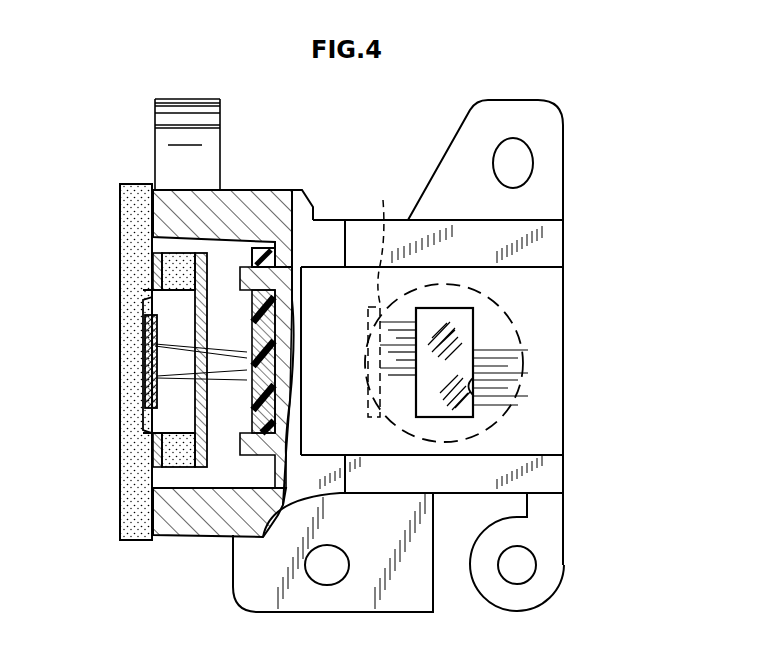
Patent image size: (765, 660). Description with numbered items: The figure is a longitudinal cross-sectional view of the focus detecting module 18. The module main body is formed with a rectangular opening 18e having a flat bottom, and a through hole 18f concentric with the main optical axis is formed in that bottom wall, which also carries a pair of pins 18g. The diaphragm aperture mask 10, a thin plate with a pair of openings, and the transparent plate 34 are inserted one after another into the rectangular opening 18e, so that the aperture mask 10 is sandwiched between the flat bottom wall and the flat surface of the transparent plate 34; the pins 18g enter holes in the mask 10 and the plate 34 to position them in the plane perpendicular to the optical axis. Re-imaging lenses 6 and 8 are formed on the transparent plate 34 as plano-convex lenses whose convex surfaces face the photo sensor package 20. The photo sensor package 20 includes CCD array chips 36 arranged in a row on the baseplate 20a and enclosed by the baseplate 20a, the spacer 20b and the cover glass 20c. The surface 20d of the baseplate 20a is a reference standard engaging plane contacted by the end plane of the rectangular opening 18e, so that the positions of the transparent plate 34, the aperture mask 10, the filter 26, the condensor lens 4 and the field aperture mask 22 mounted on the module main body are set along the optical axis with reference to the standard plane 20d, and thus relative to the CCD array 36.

The condensor lens 4 is at (536, 352).
The re-imaging lens 6 is at (252, 384).
The re-imaging lens 8 is at (251, 340).
The diaphragm aperture mask 10 is at (298, 295).
The focus detecting module 18 is at (570, 245).
The rectangular opening 18e is at (217, 245).
The through hole 18f is at (283, 332).
The pins 18g is at (252, 276).
The photo sensor package 20 is at (116, 366).
The baseplate 20a is at (125, 513).
The spacer 20b is at (173, 468).
The cover glass 20c is at (208, 450).
The reference standard engaging plane 20d is at (153, 238).
The field aperture mask 22 is at (475, 388).
The filter 26 is at (385, 299).
The transparent plate 34 is at (256, 248).
The CCD array chips 36 is at (157, 332).